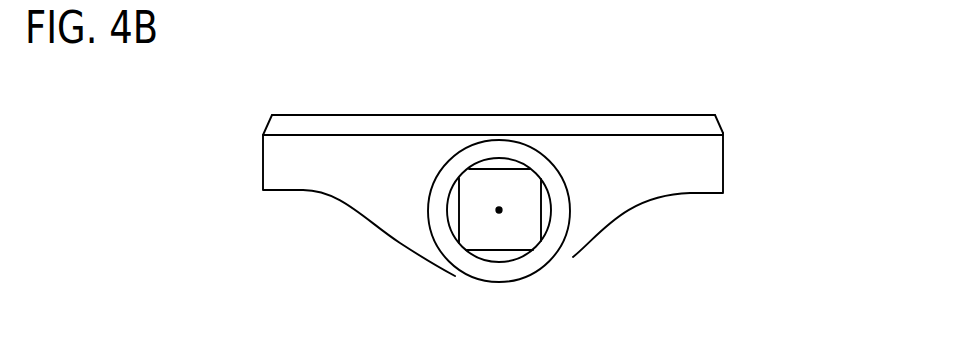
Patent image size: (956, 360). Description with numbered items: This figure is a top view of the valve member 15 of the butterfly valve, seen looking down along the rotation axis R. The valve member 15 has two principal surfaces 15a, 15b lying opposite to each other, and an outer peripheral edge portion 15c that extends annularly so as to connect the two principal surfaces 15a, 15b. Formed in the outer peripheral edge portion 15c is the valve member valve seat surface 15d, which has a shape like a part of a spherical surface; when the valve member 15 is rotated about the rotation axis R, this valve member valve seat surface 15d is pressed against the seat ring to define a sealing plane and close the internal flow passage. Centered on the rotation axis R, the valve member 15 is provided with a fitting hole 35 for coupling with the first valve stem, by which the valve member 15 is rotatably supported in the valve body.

The valve member 15 is at (406, 72).
The principal surface 15a is at (688, 195).
The principal surface 15b is at (678, 115).
The outer peripheral edge portion 15c is at (725, 167).
The valve member valve seat surface 15d is at (720, 122).
The fitting hole 35 is at (448, 213).
The rotation axis R is at (503, 210).